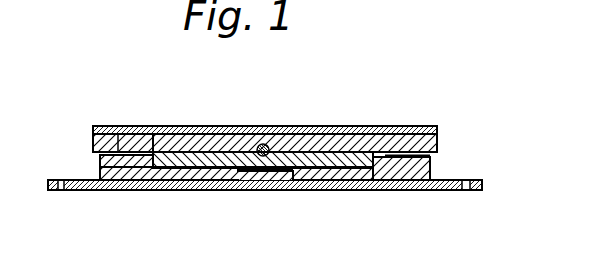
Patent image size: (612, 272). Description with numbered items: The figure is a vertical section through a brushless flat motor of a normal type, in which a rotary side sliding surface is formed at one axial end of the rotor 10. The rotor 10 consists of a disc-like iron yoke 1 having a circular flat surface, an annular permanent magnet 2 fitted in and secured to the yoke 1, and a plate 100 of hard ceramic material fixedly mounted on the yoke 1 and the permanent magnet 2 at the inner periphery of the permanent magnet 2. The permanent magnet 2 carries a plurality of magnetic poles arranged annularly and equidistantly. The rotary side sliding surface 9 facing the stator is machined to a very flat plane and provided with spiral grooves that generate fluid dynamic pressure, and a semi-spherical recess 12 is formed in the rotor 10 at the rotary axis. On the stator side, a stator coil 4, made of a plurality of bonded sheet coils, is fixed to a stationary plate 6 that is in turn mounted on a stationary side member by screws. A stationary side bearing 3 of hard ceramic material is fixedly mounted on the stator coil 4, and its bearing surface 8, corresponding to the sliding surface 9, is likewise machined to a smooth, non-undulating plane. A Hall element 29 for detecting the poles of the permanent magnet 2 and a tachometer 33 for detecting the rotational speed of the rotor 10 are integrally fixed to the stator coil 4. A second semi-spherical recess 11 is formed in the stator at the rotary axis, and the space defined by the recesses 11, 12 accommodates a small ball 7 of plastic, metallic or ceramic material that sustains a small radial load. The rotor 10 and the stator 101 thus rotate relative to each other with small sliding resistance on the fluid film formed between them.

The iron yoke 1 is at (365, 127).
The annular permanent magnet 2 is at (404, 127).
The stationary side bearing 3 is at (323, 181).
The stator coil 4 is at (372, 181).
The stationary plate 6 is at (252, 188).
The small ball 7 is at (245, 127).
The stationary side bearing surface 8 is at (203, 190).
The rotary side sliding surface 9 is at (318, 150).
The rotor 10 is at (290, 118).
The semi-spherical recess 11 is at (274, 188).
The semi-spherical recess 12 is at (263, 144).
The Hall element 29 is at (422, 153).
The tachometer 33 is at (125, 126).
The plate 100 is at (338, 127).
The stator 101 is at (160, 195).